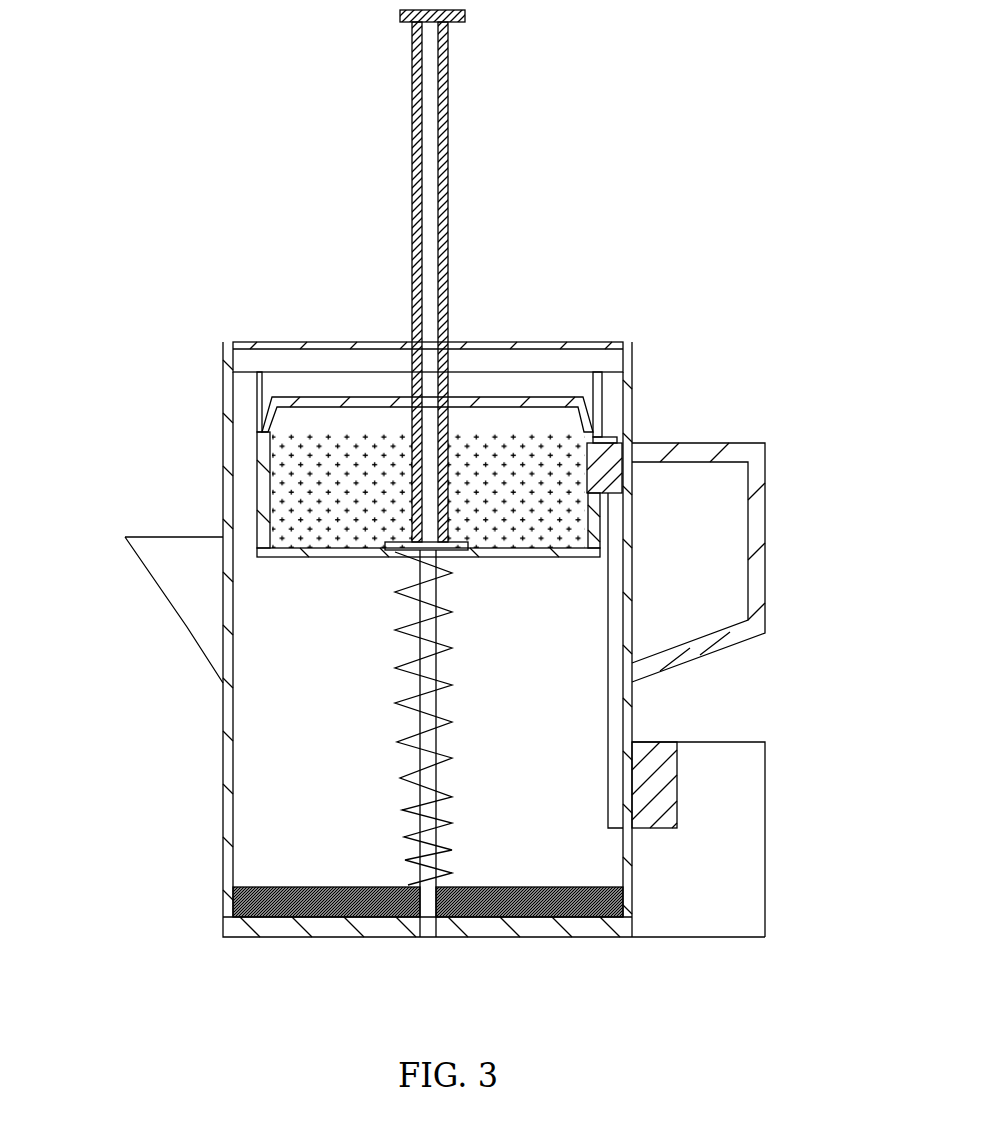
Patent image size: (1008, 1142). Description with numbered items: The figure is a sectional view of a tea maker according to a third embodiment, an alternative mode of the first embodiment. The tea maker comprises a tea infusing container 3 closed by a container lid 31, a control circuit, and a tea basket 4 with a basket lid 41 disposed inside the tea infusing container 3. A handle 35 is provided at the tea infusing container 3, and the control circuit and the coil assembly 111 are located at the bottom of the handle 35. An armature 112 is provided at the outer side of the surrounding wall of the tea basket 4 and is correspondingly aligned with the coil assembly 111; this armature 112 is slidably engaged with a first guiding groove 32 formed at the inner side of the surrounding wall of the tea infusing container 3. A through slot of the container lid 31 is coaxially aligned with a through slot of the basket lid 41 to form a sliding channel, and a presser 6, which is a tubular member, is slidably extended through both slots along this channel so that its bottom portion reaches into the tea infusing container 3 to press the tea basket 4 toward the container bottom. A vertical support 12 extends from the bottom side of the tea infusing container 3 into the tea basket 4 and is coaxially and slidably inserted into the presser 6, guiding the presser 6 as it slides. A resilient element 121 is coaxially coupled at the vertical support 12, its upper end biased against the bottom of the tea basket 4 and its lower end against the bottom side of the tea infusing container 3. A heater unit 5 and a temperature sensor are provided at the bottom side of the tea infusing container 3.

The tea infusing container 3 is at (225, 793).
The container lid 31 is at (233, 350).
The first guiding groove 32 is at (613, 640).
The handle 35 is at (757, 543).
The tea basket 4 is at (270, 498).
The basket lid 41 is at (272, 413).
The heater unit 5 is at (263, 893).
The presser 6 is at (412, 315).
The vertical support 12 is at (428, 740).
The resilient element 121 is at (442, 825).
The coil assembly 111 is at (670, 798).
The armature 112 is at (603, 485).